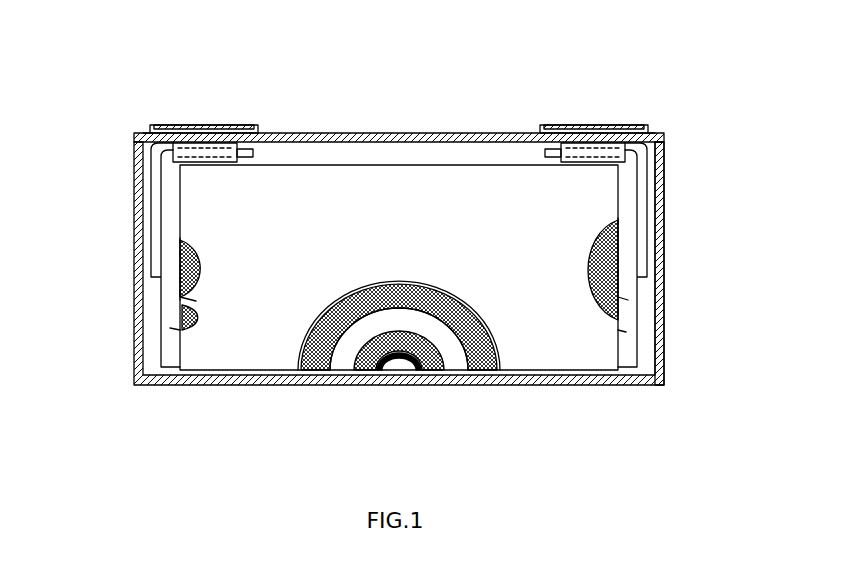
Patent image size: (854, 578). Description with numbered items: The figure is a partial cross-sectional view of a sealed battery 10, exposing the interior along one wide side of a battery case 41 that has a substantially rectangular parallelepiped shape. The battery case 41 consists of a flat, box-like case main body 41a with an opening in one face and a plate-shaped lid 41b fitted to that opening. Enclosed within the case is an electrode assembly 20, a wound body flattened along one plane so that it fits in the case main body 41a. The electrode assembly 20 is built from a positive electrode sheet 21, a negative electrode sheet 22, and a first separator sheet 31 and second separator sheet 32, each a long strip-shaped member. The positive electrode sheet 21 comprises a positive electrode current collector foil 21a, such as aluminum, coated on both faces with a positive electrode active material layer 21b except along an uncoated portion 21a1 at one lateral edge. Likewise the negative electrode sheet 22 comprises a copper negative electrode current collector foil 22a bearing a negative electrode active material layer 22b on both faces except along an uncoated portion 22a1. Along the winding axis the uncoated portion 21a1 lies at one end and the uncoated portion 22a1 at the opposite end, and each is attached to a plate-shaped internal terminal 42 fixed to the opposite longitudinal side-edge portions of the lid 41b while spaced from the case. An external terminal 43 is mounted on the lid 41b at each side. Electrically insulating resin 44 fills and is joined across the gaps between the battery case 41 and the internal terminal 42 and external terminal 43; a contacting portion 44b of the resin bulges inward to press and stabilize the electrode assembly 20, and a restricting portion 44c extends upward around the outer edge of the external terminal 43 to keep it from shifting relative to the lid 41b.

The battery 10 is at (432, 100).
The electrode assembly 20 is at (300, 163).
The positive electrode sheet 21 is at (365, 370).
The positive electrode current collector foil 21a is at (172, 297).
The uncoated portion 21a1 is at (170, 330).
The positive electrode active material layer 21b is at (200, 258).
The negative electrode sheet 22 is at (312, 370).
The negative electrode current collector foil 22a is at (626, 297).
The uncoated portion 22a1 is at (626, 330).
The negative electrode active material layer 22b is at (195, 318).
The first separator sheet 31 is at (343, 370).
The second separator sheet 32 is at (396, 370).
The battery case 41 is at (665, 182).
The case main body 41a is at (665, 278).
The lid 41b is at (343, 133).
The internal terminal 42 is at (152, 149).
The external terminal 43 is at (243, 125).
The electrically insulating resin 44 is at (199, 163).
The contacting portion 44b is at (222, 163).
The restricting portion 44c is at (146, 131).